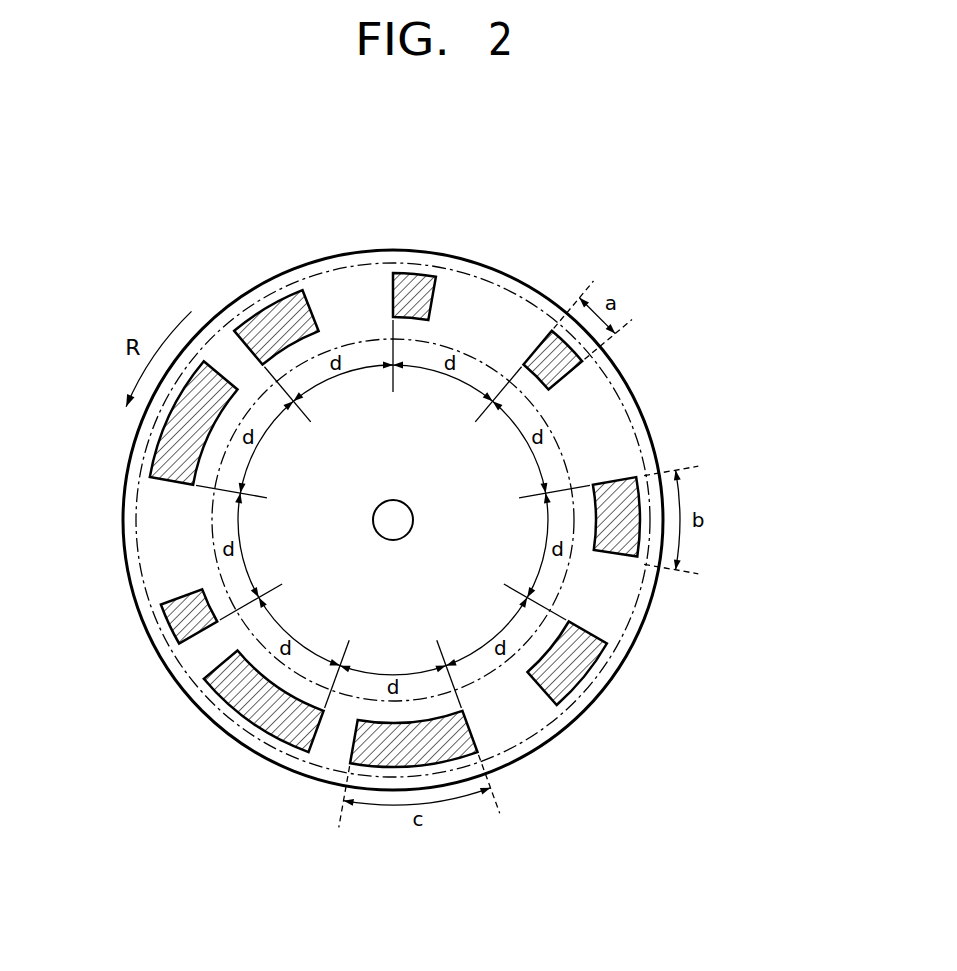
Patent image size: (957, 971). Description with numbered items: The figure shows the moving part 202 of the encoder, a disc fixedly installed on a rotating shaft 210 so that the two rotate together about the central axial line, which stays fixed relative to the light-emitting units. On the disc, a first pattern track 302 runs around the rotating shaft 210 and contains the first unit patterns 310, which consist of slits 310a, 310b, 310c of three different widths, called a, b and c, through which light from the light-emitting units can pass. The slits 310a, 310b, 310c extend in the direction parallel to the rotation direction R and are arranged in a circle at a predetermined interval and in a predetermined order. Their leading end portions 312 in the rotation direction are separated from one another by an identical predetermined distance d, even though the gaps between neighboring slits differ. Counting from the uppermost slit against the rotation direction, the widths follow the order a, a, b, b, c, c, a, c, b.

The moving part 202 is at (511, 268).
The rotating shaft 210 is at (407, 535).
The first pattern track 302 is at (323, 270).
The first unit patterns 310 is at (452, 491).
The slit 310a is at (420, 283).
The slit 310b is at (273, 313).
The slit 310c is at (165, 452).
The leading end portions 312 is at (393, 291).